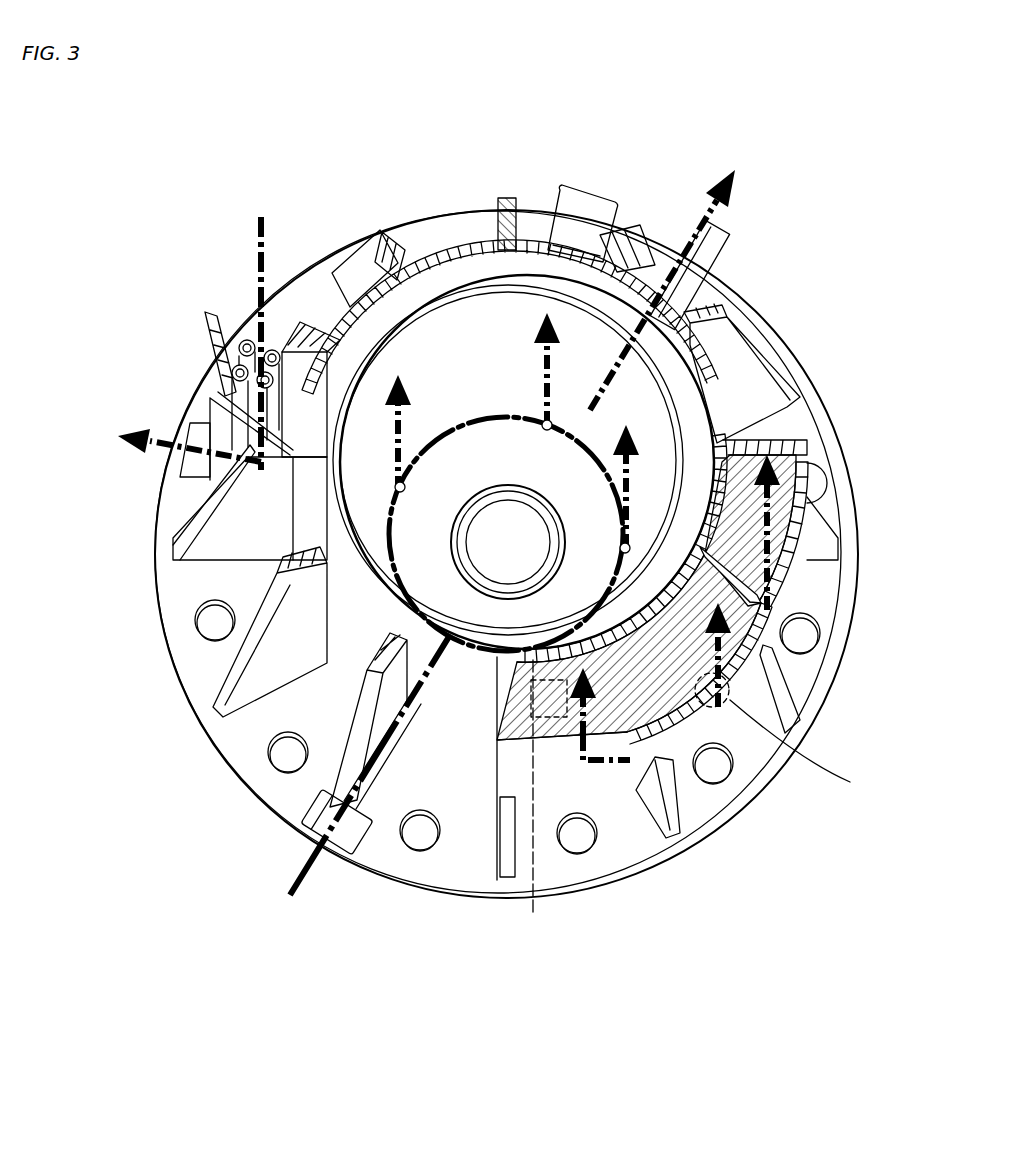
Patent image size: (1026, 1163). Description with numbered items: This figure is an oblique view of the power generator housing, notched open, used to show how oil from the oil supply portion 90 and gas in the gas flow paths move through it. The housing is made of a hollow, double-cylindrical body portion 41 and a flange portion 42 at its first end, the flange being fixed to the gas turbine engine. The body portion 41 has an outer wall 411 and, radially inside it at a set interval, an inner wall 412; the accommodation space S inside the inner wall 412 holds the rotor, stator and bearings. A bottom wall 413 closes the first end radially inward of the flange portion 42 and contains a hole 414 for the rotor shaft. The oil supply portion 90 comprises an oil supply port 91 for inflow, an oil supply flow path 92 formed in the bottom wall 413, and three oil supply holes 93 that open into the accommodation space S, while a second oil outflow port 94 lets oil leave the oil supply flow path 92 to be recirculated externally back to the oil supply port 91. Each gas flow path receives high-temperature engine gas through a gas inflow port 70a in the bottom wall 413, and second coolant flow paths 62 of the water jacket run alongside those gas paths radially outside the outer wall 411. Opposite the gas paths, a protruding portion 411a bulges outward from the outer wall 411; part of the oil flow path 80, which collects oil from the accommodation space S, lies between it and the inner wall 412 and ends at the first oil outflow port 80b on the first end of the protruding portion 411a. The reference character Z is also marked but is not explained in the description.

The body portion 41 is at (510, 369).
The outer wall 411 is at (470, 298).
The inner wall 412 is at (445, 290).
The protruding portion 411a is at (230, 415).
The bottom wall 413 is at (740, 425).
The hole 414 is at (486, 492).
The flange portion 42 is at (780, 345).
The second coolant flow paths 62 is at (800, 508).
The gas inflow port 70a is at (735, 705).
The oil flow path 80 is at (240, 345).
The first oil outflow port 80b is at (196, 478).
The oil supply portion 90 is at (355, 898).
The oil supply port 91 is at (305, 822).
The oil supply flow path 92 is at (403, 575).
The oil supply holes 93 is at (624, 546).
The second oil outflow port 94 is at (700, 258).
The accommodation space S is at (510, 300).
The axis Z is at (520, 802).